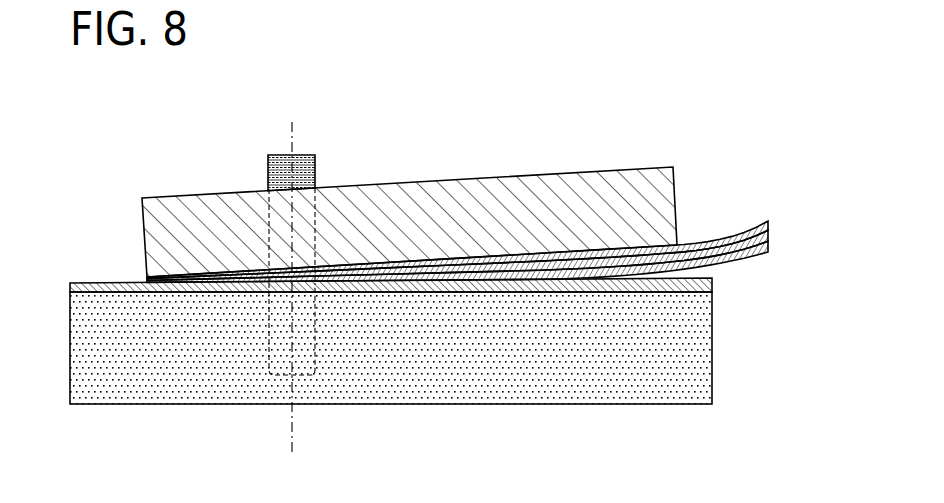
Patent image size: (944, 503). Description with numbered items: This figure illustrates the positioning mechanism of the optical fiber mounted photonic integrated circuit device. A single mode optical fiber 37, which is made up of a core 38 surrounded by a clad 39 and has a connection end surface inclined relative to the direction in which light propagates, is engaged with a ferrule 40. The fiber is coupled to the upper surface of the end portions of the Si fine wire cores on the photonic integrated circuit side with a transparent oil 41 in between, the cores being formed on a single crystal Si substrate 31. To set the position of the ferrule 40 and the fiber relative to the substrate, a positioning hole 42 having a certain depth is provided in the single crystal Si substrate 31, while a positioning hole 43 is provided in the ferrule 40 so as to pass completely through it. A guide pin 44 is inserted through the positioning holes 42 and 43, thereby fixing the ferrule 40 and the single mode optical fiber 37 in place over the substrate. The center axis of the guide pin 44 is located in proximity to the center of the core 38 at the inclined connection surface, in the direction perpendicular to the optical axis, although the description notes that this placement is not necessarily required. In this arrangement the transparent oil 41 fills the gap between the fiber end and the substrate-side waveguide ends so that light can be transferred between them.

The single crystal Si substrate 31 is at (70, 340).
The single mode optical fiber 37 is at (506, 237).
The core 38 is at (768, 237).
The clad 39 is at (768, 222).
The ferrule 40 is at (547, 175).
The transparent oil 41 is at (70, 288).
The positioning hole 42 is at (273, 378).
The positioning hole 43 is at (315, 223).
The guide pin 44 is at (268, 170).